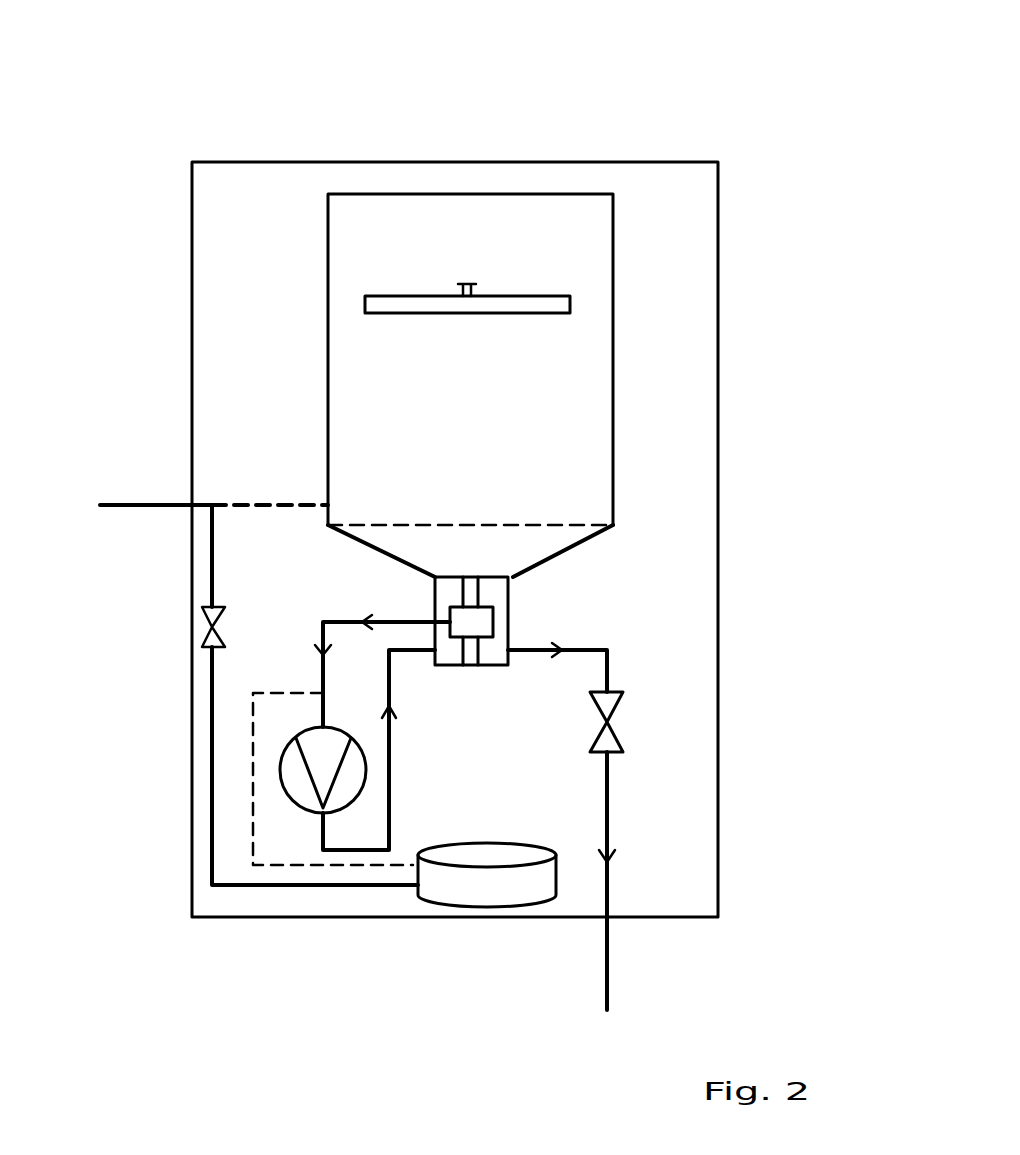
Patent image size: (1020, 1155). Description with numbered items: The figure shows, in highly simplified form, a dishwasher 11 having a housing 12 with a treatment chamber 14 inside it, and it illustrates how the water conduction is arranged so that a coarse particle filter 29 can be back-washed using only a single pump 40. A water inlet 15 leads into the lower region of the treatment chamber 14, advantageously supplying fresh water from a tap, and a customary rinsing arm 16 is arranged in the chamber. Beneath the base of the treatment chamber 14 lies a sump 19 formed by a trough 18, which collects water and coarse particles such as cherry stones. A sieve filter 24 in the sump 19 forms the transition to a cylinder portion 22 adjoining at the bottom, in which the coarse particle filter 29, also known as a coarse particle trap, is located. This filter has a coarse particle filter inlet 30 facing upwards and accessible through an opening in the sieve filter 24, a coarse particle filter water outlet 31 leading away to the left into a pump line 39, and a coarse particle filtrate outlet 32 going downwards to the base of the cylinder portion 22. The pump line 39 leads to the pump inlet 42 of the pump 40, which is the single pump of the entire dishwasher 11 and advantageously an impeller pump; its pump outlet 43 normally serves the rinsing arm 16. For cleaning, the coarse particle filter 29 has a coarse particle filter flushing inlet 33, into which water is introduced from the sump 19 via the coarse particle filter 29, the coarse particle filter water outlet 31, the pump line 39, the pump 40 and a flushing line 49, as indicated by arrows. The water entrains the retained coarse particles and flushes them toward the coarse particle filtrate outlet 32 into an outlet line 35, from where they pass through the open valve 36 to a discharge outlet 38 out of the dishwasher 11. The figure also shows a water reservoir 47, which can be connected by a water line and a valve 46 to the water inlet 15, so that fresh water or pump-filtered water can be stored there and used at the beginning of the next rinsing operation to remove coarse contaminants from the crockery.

The dishwasher 11 is at (720, 84).
The housing 12 is at (718, 215).
The treatment chamber 14 is at (482, 414).
The water inlet 15 is at (140, 504).
The rinsing arm 16 is at (513, 296).
The trough 18 is at (435, 577).
The sump 19 is at (510, 558).
The cylinder portion 22 is at (437, 605).
The sieve filter 24 is at (468, 577).
The coarse particle filter 29 is at (477, 625).
The coarse particle filter inlet 30 is at (477, 598).
The coarse particle filter water outlet 31 is at (448, 622).
The coarse particle filtrate outlet 32 is at (607, 672).
The coarse particle filter flushing inlet 33 is at (437, 652).
The outlet line 35 is at (510, 652).
The valve 36 is at (618, 733).
The discharge outlet 38 is at (607, 972).
The pump line 39 is at (388, 626).
The pump 40 is at (283, 790).
The pump inlet 42 is at (323, 722).
The pump outlet 43 is at (323, 823).
The valve 46 is at (202, 627).
The water reservoir 47 is at (482, 882).
The flushing line 49 is at (389, 812).